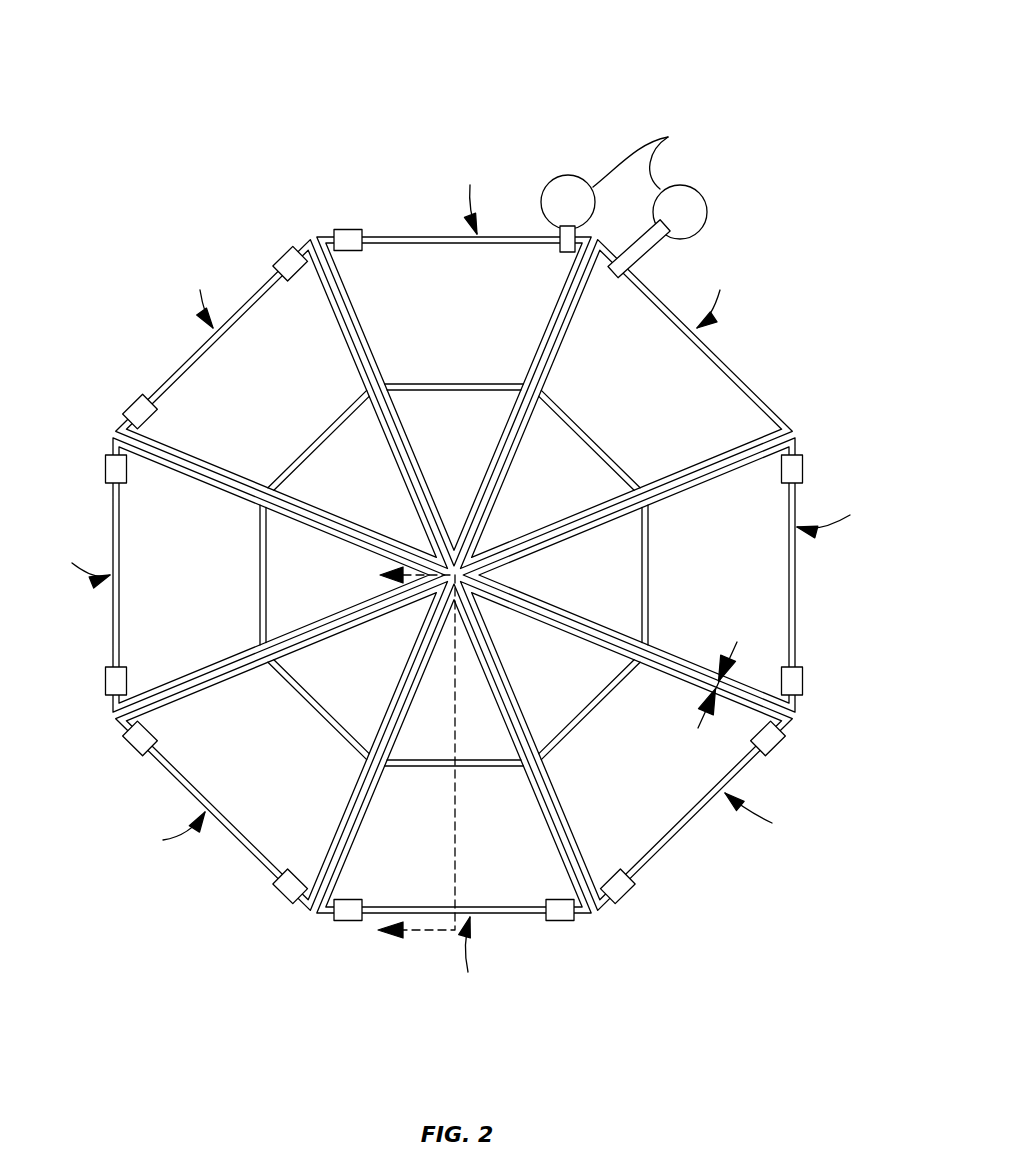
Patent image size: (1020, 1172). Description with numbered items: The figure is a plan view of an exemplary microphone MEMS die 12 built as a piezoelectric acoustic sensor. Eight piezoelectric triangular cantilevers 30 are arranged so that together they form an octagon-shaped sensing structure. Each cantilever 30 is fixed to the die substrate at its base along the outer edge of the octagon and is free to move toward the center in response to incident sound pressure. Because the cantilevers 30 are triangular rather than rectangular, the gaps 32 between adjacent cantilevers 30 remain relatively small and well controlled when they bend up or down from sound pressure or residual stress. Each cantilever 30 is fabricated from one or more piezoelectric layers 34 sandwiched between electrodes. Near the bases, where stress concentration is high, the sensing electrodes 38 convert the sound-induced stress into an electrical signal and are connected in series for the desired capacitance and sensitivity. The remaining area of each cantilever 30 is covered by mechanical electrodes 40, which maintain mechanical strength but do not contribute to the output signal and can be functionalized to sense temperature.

The MEMS die 12 is at (312, 110).
The piezoelectric triangular cantilever 30 is at (512, 214).
The gaps 32 is at (737, 683).
The piezoelectric layer 34 is at (291, 262).
The sensing electrodes 38 is at (612, 782).
The mechanical electrodes 40 is at (452, 432).